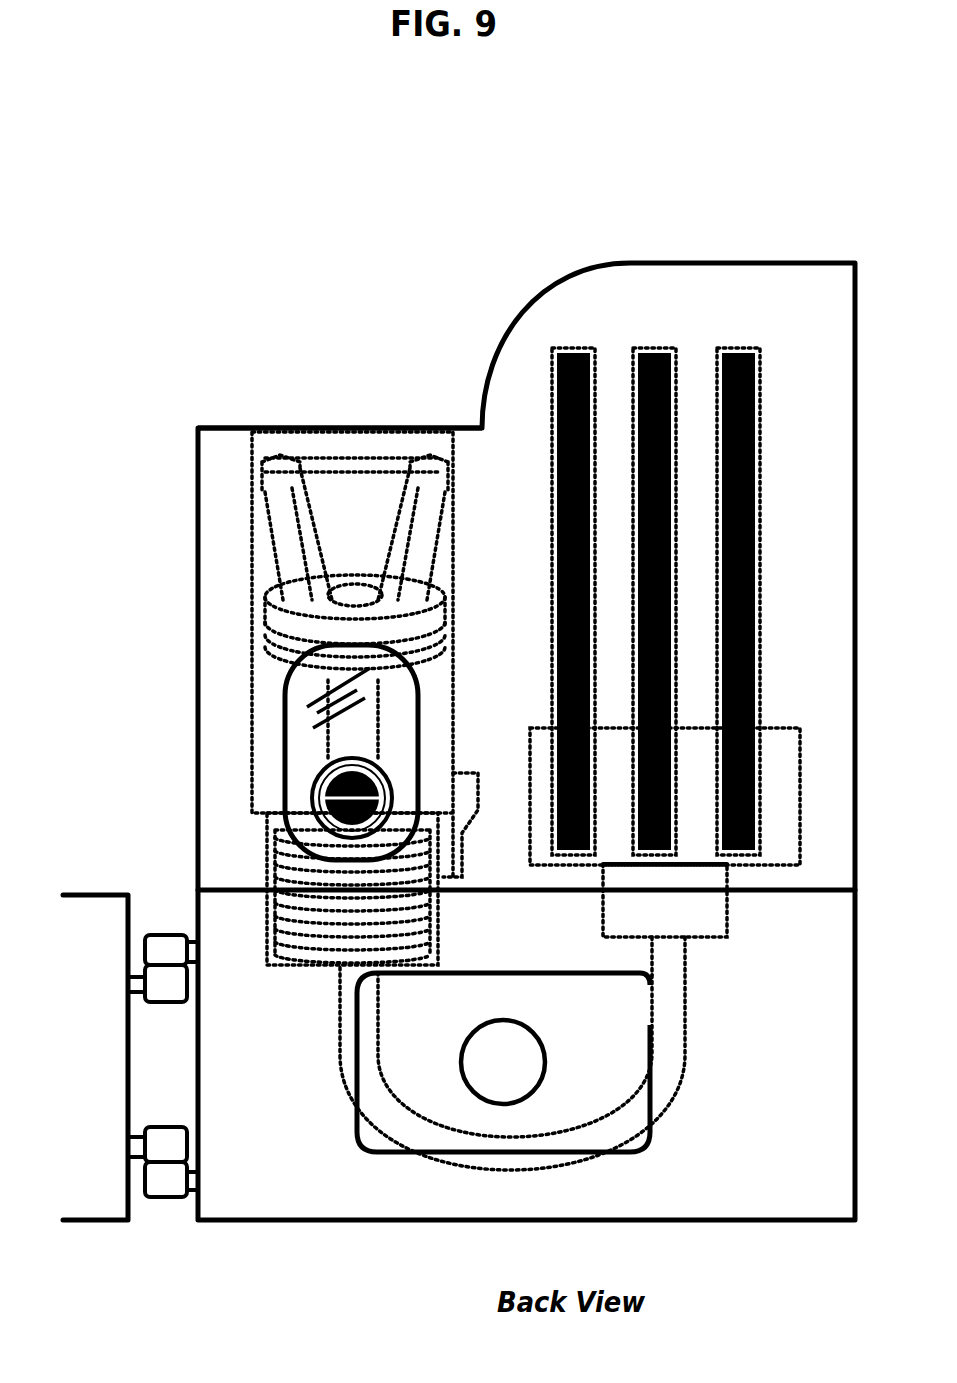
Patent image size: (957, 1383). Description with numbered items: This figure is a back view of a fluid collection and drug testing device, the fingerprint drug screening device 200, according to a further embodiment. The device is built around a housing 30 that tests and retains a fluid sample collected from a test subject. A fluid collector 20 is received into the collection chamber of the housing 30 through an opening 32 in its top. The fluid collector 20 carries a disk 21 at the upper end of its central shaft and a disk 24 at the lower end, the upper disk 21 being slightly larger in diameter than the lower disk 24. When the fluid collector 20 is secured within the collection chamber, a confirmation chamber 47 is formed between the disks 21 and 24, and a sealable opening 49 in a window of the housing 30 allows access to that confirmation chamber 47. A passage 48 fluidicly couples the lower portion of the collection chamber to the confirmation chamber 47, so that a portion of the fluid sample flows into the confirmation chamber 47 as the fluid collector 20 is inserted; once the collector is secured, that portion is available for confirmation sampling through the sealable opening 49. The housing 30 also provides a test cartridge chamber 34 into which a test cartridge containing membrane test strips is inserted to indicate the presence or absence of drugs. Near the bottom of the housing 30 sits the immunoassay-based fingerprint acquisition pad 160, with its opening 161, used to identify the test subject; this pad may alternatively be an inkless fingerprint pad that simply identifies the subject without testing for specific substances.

The fingerprint drug screening device 200 is at (488, 172).
The housing 30 is at (537, 308).
The opening 32 is at (343, 420).
The fluid collector 20 is at (262, 542).
The test cartridge chamber 34 is at (300, 668).
The confirmation chamber 47 is at (269, 730).
The sealable opening 49 is at (333, 823).
The disk 21 is at (430, 665).
The disk 24 is at (418, 850).
The passage 48 is at (482, 772).
The immunoassay-based fingerprint acquisition pad 160 is at (650, 1152).
The drain opening 161 is at (537, 1030).